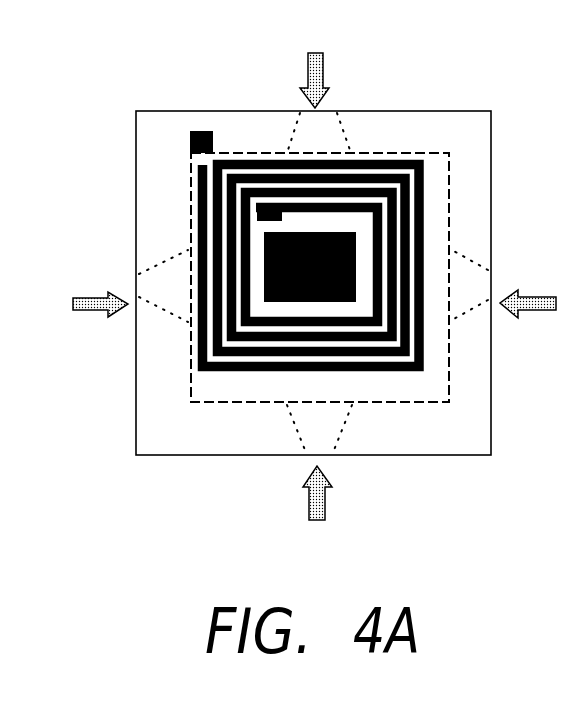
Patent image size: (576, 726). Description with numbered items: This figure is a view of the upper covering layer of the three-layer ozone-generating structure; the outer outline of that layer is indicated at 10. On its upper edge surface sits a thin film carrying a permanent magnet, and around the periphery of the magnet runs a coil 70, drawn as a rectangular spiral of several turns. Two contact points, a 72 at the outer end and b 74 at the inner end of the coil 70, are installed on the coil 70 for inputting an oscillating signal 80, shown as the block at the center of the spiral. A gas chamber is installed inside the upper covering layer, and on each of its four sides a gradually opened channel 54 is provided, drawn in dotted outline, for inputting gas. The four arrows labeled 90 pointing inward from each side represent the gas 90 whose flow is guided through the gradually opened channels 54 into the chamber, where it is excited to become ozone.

The tag substrate 10 is at (402, 455).
The gradually opened channel 54 is at (148, 283).
The coil 70 is at (407, 158).
The contact point a 72 is at (190, 143).
The contact point b 74 is at (257, 215).
The oscillating signal 80 is at (266, 301).
The gas 90 is at (193, 130).